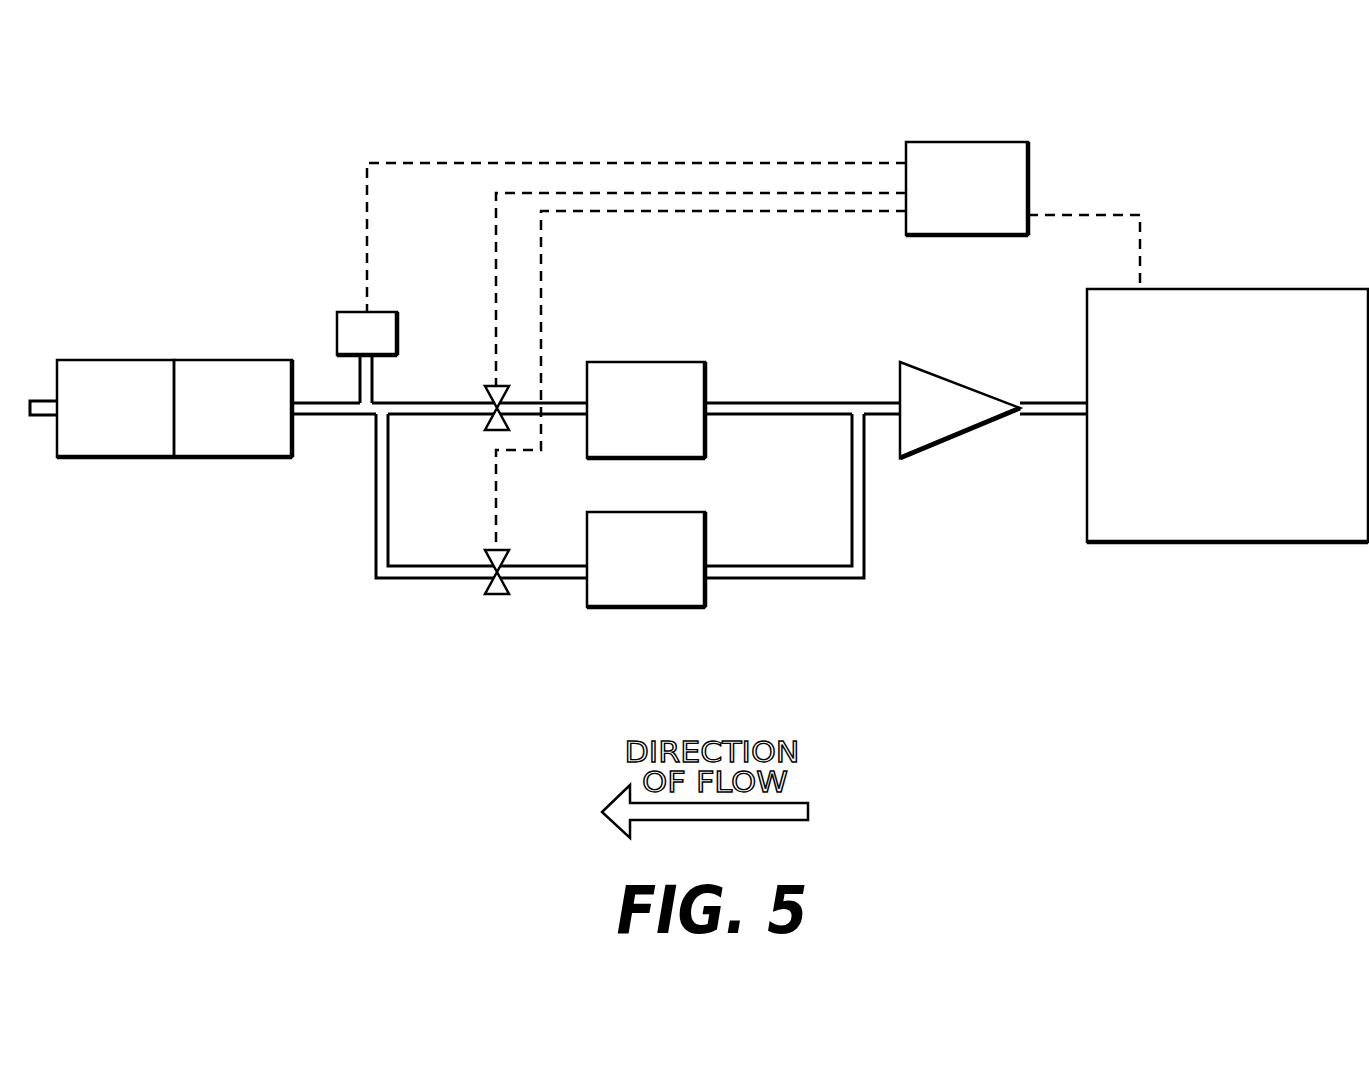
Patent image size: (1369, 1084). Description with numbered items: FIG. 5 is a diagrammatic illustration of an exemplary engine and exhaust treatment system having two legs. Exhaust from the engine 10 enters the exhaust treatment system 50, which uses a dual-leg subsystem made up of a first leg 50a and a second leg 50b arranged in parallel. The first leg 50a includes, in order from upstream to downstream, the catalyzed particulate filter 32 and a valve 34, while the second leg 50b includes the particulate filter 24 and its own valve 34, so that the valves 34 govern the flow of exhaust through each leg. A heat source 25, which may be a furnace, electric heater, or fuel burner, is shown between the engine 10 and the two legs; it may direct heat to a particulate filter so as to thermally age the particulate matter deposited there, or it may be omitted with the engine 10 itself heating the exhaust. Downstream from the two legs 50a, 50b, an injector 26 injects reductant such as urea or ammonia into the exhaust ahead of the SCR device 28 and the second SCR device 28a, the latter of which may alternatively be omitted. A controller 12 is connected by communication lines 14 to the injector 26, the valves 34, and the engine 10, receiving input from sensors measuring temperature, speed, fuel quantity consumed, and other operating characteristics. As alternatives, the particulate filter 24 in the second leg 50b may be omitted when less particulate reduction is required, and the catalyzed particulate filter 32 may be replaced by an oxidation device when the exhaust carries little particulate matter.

The engine 10 is at (1215, 289).
The controller 12 is at (1028, 150).
The communication lines 14 is at (496, 268).
The particulate filter 24 is at (655, 607).
The heat source 25 is at (960, 385).
The injector 26 is at (390, 312).
The SCR device 28 is at (228, 360).
The second SCR device 28a is at (112, 360).
The catalyzed particulate filter 32 is at (668, 362).
The valve 34 is at (487, 432).
The exhaust treatment system 50 is at (235, 232).
The first leg 50a is at (803, 352).
The second leg 50b is at (801, 615).